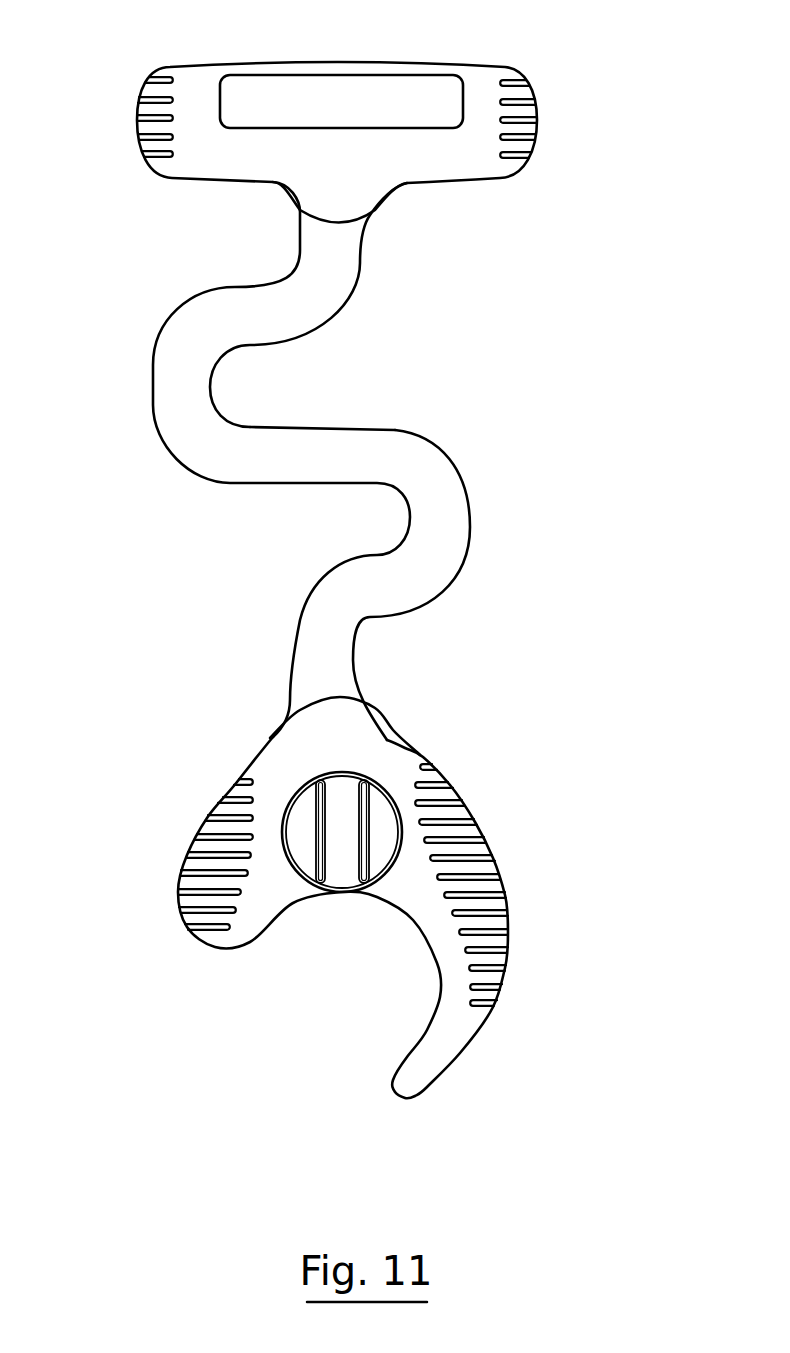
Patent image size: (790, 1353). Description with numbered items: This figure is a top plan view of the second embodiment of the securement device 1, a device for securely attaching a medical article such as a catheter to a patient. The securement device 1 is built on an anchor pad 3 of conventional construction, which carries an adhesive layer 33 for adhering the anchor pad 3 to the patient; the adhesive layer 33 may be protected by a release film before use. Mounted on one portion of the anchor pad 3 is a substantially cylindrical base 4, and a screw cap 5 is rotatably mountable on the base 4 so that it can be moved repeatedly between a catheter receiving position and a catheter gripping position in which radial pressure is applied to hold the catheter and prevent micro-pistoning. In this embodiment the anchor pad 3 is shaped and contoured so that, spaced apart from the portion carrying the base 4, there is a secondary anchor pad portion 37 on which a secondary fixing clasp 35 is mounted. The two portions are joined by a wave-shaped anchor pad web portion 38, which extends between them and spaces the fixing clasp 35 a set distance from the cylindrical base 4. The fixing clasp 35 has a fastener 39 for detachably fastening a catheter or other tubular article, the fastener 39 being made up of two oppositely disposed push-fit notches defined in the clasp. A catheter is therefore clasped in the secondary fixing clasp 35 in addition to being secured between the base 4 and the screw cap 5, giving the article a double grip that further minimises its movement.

The securement device 1 is at (497, 327).
The anchor pad 3 is at (470, 525).
The cylindrical base 4 is at (373, 780).
The screw cap 5 is at (305, 851).
The adhesive layer 33 is at (428, 1060).
The secondary fixing clasp 35 is at (113, 113).
The secondary anchor pad portion 37 is at (535, 107).
The wave-shaped anchor pad web portion 38 is at (367, 427).
The fastener 39 is at (320, 102).